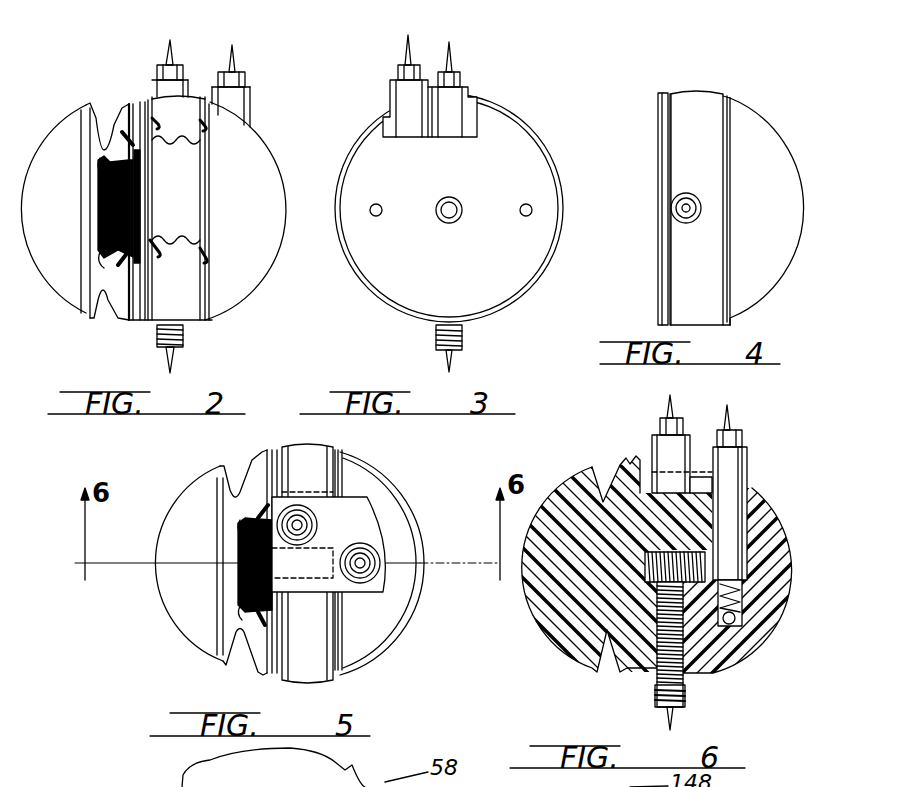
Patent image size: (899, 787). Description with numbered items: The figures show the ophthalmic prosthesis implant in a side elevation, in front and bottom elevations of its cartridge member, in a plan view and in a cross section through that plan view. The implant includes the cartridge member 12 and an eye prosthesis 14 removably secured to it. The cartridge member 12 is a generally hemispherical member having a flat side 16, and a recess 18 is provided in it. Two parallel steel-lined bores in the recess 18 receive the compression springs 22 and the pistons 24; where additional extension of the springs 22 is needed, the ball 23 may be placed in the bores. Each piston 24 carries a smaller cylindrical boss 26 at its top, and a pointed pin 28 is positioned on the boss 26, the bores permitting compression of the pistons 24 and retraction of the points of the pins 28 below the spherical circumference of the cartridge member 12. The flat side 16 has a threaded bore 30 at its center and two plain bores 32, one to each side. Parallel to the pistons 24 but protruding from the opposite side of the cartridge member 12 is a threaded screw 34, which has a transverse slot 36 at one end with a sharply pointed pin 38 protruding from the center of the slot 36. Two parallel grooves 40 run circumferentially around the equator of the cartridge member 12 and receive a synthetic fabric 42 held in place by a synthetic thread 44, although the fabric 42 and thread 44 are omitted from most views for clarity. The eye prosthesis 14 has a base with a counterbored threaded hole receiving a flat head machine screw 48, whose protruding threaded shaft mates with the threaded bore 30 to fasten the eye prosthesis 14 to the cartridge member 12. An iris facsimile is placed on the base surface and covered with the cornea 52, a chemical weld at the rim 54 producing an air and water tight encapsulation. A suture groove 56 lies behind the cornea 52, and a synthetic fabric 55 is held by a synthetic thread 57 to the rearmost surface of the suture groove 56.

In FIG. 2, the cartridge member 12 is at (244, 170).
In FIG. 4, the cartridge member 12 is at (760, 152).
In FIG. 5, the cartridge member 12 is at (384, 481).
In FIG. 6, the cartridge member 12 is at (783, 518).
In FIG. 2, the eye prosthesis 14 is at (53, 120).
In FIG. 5, the eye prosthesis 14 is at (174, 490).
In FIG. 6, the eye prosthesis 14 is at (571, 648).
In FIG. 3, the flat side 16 is at (520, 175).
In FIG. 4, the flat side 16 is at (660, 117).
In FIG. 3, the recess 18 is at (470, 120).
In FIG. 5, the recess 18 is at (360, 512).
In FIG. 6, the compression springs 22 is at (745, 600).
In FIG. 6, the ball 23 is at (737, 619).
In FIG. 2, the pistons 24 is at (250, 112).
In FIG. 3, the pistons 24 is at (460, 100).
In FIG. 5, the pistons 24 is at (370, 587).
In FIG. 6, the pistons 24 is at (742, 465).
In FIG. 2, the cylindrical boss 26 is at (246, 80).
In FIG. 3, the cylindrical boss 26 is at (462, 82).
In FIG. 5, the cylindrical boss 26 is at (378, 580).
In FIG. 6, the cylindrical boss 26 is at (745, 437).
In FIG. 2, the pointed pin 28 is at (236, 56).
In FIG. 3, the pointed pin 28 is at (455, 60).
In FIG. 5, the pointed pin 28 is at (378, 552).
In FIG. 6, the pointed pin 28 is at (731, 416).
In FIG. 3, the threaded bore 30 is at (456, 204).
In FIG. 3, the plain bores 32 is at (533, 210).
In FIG. 2, the threaded screw 34 is at (158, 338).
In FIG. 3, the threaded screw 34 is at (465, 337).
In FIG. 4, the threaded screw 34 is at (698, 220).
In FIG. 6, the threaded screw 34 is at (690, 697).
In FIG. 4, the transverse slot 36 is at (688, 194).
In FIG. 2, the sharply pointed pin 38 is at (176, 355).
In FIG. 3, the sharply pointed pin 38 is at (455, 360).
In FIG. 4, the sharply pointed pin 38 is at (700, 206).
In FIG. 6, the sharply pointed pin 38 is at (675, 715).
In FIG. 2, the parallel grooves 40 is at (203, 262).
In FIG. 4, the parallel grooves 40 is at (727, 97).
In FIG. 5, the parallel grooves 40 is at (340, 452).
In FIG. 2, the synthetic fabric 42 is at (192, 222).
In FIG. 2, the synthetic thread 44 is at (205, 252).
In FIG. 5, the flat head machine screw 48 is at (299, 592).
In FIG. 6, the flat head machine screw 48 is at (700, 492).
In FIG. 2, the cornea 52 is at (42, 245).
In FIG. 5, the cornea 52 is at (170, 620).
In FIG. 6, the cornea 52 is at (565, 480).
In FIG. 2, the rim 54 is at (80, 316).
In FIG. 2, the synthetic fabric 55 is at (100, 182).
In FIG. 2, the suture groove 56 is at (100, 125).
In FIG. 5, the suture groove 56 is at (237, 470).
In FIG. 6, the suture groove 56 is at (605, 470).
In FIG. 2, the synthetic thread 57 is at (130, 115).